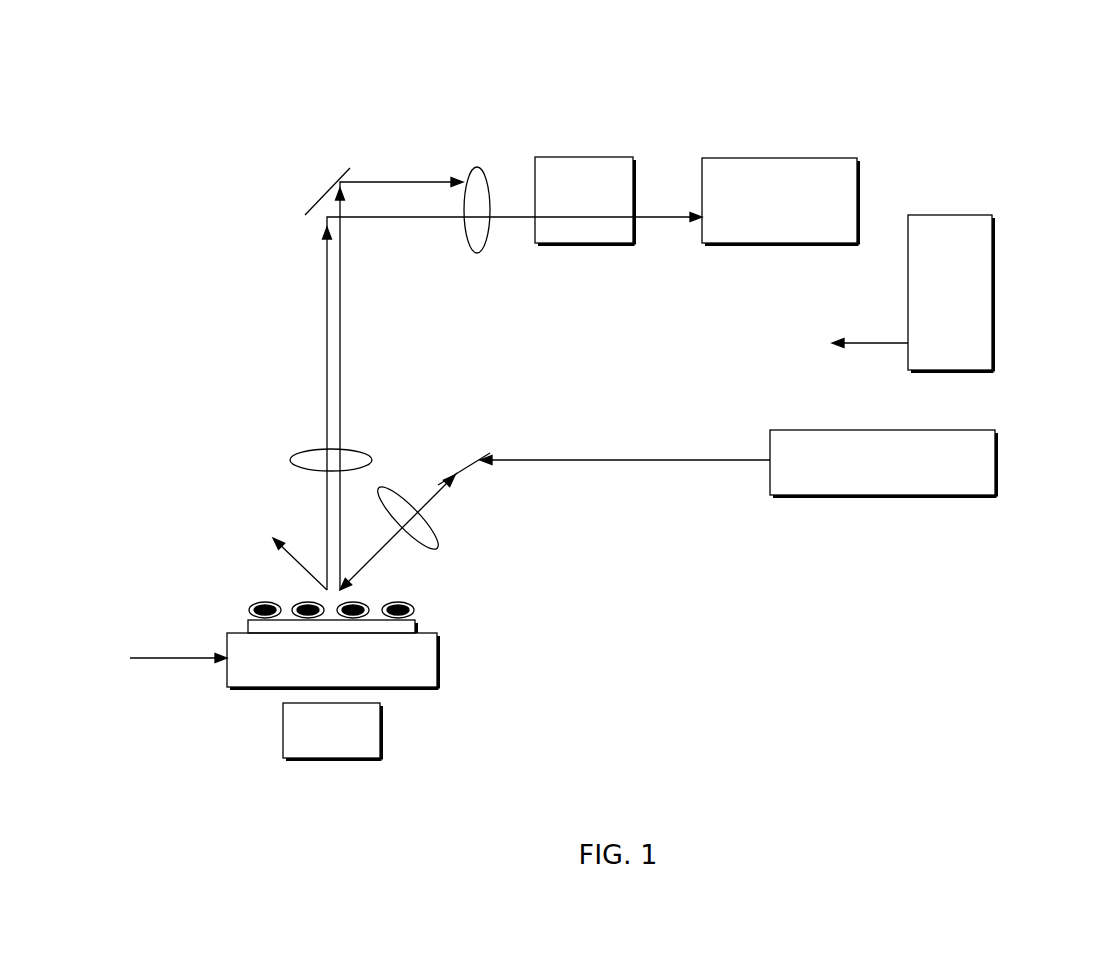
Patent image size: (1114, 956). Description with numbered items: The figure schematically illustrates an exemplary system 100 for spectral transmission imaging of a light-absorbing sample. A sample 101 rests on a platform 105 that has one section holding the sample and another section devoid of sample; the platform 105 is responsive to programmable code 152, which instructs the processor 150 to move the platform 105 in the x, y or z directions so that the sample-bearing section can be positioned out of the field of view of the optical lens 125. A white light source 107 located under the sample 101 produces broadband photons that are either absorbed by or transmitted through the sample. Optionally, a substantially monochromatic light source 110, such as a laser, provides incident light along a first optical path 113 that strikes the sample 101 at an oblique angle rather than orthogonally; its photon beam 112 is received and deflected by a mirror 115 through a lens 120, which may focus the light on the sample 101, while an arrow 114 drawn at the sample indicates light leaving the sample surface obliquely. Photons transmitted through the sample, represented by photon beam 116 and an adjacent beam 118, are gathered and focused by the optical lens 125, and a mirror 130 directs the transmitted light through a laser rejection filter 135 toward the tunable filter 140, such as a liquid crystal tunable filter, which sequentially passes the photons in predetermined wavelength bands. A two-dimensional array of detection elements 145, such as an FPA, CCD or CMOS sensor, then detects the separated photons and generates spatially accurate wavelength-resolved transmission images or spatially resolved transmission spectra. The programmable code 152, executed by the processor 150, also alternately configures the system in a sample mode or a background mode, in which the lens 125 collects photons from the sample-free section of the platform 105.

The system 100 is at (1094, 65).
The sample 101 is at (412, 587).
The platform 105 is at (438, 658).
The white light source 107 is at (382, 730).
The monochromatic light source 110 is at (997, 458).
The photon beam 112 is at (642, 461).
The first optical path 113 is at (397, 537).
The reflected light 114 is at (297, 561).
The mirror 115 is at (463, 467).
The photon beam 116 is at (327, 322).
The collected light path 118 is at (340, 297).
The lens 120 is at (432, 530).
The optical lens 125 is at (307, 452).
The mirror 130 is at (330, 195).
The laser rejection filter 135 is at (483, 178).
The tunable filter 140 is at (587, 157).
The two-dimensional array of detection elements 145 is at (787, 158).
The processor 150 is at (964, 305).
The programmable code 152 is at (172, 657).